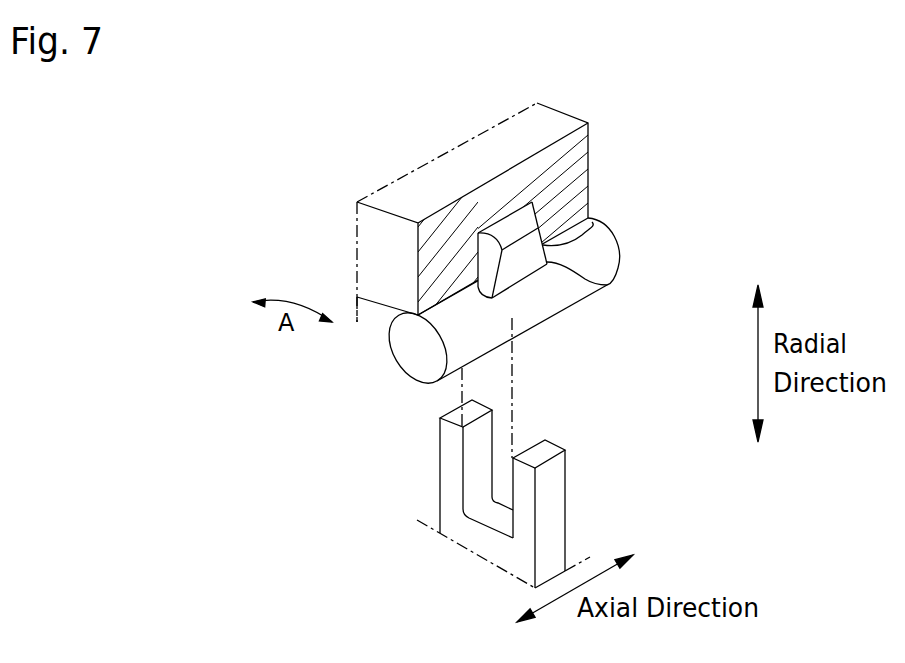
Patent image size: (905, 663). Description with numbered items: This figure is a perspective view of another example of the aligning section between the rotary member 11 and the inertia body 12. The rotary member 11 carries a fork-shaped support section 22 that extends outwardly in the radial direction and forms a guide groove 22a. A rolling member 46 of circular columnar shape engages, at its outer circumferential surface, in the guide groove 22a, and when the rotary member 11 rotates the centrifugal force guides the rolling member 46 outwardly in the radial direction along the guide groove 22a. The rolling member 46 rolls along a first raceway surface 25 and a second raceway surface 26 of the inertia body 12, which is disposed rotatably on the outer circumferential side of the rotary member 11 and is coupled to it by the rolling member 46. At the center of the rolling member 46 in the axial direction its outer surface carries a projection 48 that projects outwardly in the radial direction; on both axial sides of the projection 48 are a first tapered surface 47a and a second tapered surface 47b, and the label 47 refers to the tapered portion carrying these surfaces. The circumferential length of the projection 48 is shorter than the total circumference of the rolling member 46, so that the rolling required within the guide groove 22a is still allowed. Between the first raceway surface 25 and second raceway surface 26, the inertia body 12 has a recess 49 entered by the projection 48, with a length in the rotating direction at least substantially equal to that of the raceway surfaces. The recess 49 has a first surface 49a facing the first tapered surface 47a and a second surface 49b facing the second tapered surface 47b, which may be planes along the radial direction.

The rotary member 11 is at (445, 532).
The inertia body 12 is at (387, 197).
The support section 22 is at (552, 448).
The guide groove 22a is at (474, 467).
The first raceway surface 25 is at (375, 306).
The second raceway surface 26 is at (598, 240).
The rolling member 46 is at (595, 261).
The groove 47 is at (486, 218).
The first tapered surface 47a is at (490, 265).
The second tapered surface 47b is at (608, 286).
The projection 48 is at (532, 222).
The recess 49 is at (522, 205).
The first surface 49a is at (474, 257).
The second surface 49b is at (513, 197).